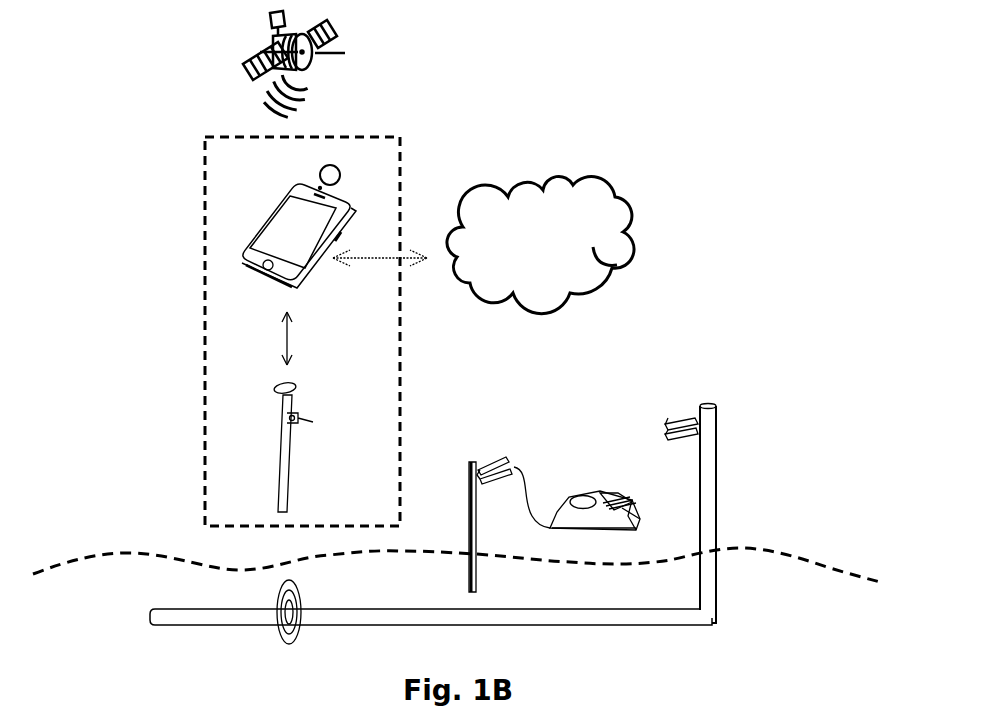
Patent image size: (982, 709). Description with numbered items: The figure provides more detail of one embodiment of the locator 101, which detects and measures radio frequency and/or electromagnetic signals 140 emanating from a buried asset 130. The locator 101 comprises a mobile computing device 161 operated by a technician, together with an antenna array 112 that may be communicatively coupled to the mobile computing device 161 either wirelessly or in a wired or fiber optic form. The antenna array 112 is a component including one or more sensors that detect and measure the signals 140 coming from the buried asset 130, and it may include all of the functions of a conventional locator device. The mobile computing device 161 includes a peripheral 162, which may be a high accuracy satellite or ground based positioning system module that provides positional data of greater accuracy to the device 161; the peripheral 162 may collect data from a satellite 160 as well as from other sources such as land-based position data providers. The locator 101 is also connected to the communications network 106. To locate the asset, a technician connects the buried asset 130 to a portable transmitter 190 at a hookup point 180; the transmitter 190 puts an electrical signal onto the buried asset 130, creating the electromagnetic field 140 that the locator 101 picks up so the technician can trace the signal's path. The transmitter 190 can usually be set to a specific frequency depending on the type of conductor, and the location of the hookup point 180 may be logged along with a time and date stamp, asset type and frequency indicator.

The satellite 160 is at (313, 68).
The locator 101 is at (401, 408).
The mobile computing device 161 is at (312, 182).
The peripheral 162 is at (343, 172).
The antenna array 112 is at (289, 466).
The communications network 106 is at (540, 244).
The portable transmitter 190 is at (658, 424).
The hookup point 180 is at (722, 455).
The buried asset 130 is at (644, 622).
The electromagnetic signals 140 is at (283, 644).